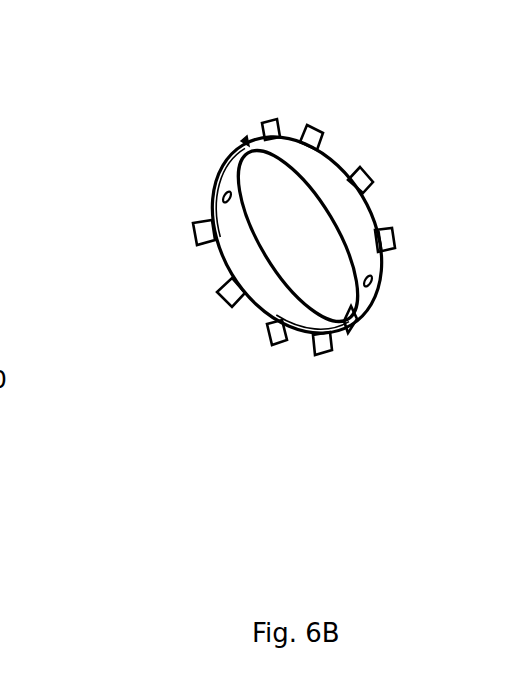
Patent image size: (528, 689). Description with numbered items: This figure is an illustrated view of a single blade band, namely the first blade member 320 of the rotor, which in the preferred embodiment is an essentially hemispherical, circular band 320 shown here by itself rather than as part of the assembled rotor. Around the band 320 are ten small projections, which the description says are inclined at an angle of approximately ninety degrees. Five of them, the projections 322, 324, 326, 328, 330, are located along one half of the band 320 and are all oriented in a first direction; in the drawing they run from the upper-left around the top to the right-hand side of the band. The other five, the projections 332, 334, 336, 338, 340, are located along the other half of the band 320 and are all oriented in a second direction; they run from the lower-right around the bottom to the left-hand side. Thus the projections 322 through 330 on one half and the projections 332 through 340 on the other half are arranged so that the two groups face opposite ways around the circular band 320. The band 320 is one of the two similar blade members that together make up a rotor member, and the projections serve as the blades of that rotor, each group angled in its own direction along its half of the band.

The first blade member 320 is at (297, 235).
The projection 322 is at (243, 140).
The projection 324 is at (267, 121).
The projection 326 is at (322, 123).
The projection 328 is at (367, 165).
The projection 330 is at (397, 238).
The projection 332 is at (353, 330).
The projection 334 is at (328, 357).
The projection 336 is at (275, 348).
The projection 338 is at (231, 307).
The projection 340 is at (195, 238).